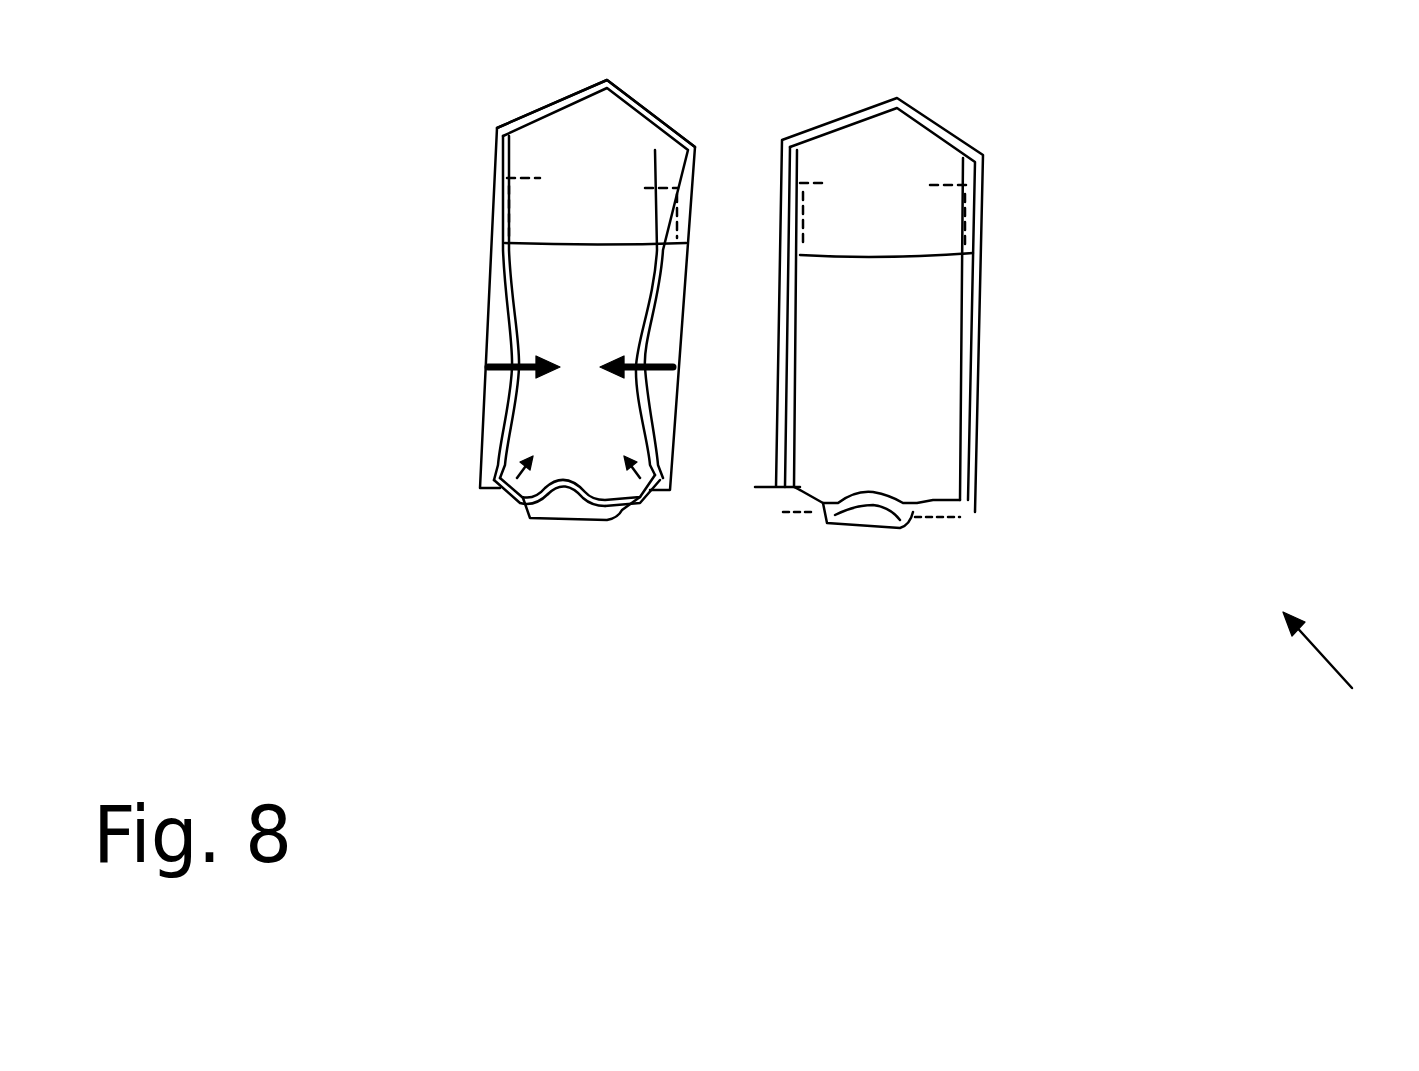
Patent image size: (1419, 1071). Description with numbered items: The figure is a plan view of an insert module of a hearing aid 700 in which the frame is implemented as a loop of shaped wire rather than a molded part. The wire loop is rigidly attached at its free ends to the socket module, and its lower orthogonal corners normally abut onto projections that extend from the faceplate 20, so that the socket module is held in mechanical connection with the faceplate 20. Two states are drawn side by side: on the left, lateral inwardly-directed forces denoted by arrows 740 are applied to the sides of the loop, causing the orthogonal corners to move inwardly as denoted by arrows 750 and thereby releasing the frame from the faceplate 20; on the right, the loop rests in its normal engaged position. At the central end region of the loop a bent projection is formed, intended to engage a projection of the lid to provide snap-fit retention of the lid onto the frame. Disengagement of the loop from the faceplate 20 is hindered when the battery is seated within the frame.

The faceplate 20 is at (415, 110).
The hearing aid 700 is at (1350, 690).
The arrows denoting lateral inwardly-directed forces 740 is at (600, 382).
The arrows denoting inward corner movement 750 is at (507, 497).